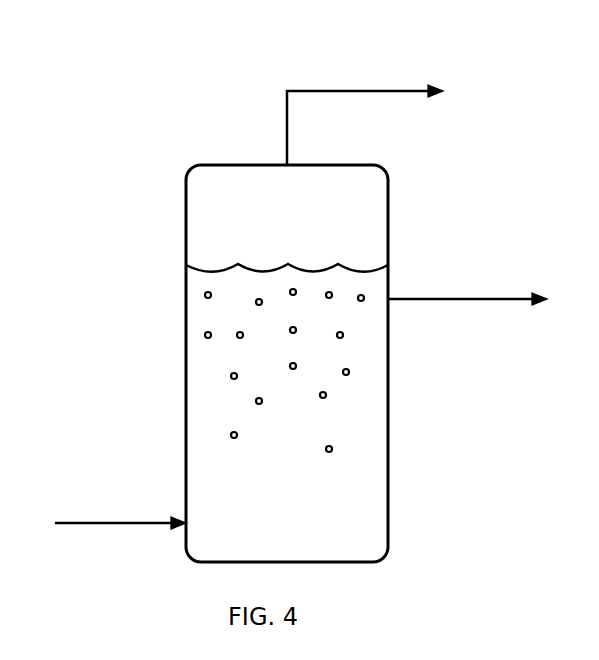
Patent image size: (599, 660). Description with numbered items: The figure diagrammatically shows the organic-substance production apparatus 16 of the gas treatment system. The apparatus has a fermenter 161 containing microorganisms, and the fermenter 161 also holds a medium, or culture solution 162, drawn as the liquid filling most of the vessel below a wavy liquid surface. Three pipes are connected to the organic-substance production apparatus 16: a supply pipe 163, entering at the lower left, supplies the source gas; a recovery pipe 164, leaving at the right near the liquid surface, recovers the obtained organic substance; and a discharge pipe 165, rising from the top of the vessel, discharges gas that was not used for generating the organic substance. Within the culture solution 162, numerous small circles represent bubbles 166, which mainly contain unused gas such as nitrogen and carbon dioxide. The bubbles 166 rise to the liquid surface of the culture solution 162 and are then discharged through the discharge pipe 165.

The organic-substance production apparatus 16 is at (82, 38).
The fermenter 161 is at (186, 343).
The medium (culture solution) 162 is at (362, 502).
The supply pipe 163 is at (118, 520).
The recovery pipe 164 is at (453, 297).
The discharge pipe 165 is at (287, 128).
The bubbles 166 is at (343, 338).